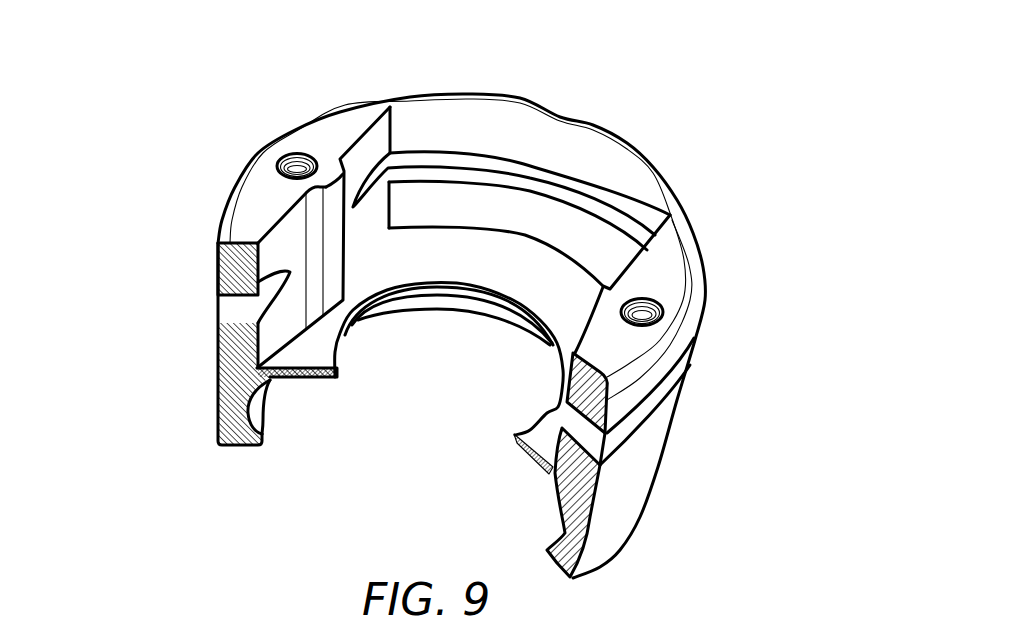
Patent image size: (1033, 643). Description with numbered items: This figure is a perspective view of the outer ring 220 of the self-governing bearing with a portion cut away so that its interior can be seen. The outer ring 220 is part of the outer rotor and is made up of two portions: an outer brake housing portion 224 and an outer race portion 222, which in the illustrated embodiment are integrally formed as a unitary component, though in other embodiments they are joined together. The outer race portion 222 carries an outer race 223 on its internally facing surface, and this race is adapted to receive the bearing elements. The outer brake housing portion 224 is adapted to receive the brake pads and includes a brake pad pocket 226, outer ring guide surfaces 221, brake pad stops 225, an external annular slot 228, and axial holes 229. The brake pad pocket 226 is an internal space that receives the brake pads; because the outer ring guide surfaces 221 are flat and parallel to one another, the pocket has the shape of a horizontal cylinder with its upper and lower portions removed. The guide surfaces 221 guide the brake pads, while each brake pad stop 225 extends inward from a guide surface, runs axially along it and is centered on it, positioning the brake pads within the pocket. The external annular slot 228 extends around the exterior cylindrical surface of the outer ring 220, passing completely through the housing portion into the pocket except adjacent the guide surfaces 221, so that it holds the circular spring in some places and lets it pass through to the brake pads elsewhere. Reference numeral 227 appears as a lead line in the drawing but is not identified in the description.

The outer ring 220 is at (675, 60).
The outer ring guide surfaces 221 is at (357, 236).
The outer race portion 222 is at (220, 421).
The outer race 223 is at (257, 407).
The outer brake housing portion 224 is at (227, 263).
The brake pad stop 225 is at (315, 218).
The brake pad pocket 226 is at (627, 190).
The inner channel 227 is at (493, 253).
The external annular slot 228 is at (230, 313).
The axial holes 229 is at (298, 162).